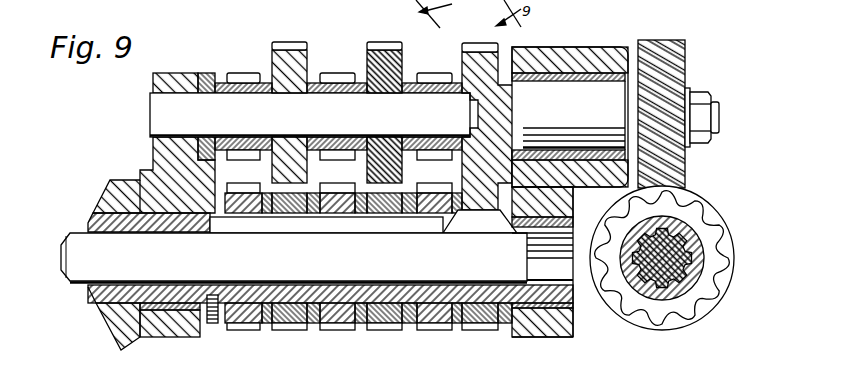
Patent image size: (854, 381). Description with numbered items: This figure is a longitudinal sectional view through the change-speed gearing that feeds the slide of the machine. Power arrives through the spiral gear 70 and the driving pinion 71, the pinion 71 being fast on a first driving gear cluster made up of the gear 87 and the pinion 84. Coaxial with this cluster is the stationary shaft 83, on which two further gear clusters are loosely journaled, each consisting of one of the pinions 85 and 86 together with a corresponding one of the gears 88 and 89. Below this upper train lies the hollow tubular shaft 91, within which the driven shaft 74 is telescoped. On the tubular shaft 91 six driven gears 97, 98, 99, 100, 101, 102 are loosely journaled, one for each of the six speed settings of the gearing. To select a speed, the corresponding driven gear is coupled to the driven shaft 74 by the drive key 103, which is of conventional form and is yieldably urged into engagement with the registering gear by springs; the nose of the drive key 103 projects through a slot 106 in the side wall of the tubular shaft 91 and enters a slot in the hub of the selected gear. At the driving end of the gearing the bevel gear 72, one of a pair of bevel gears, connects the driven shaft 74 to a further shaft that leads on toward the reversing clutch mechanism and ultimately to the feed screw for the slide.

The spiral gear 70 is at (702, 226).
The pinion 71 is at (680, 50).
The bevel gear 72 is at (112, 325).
The driven shaft 74 is at (85, 248).
The stationary shaft 83 is at (165, 104).
The pinion 84 is at (432, 153).
The pinion 85 is at (338, 78).
The pinion 86 is at (241, 78).
The gear 87 is at (473, 46).
The gear 88 is at (385, 43).
The gear 89 is at (290, 43).
The hollow tubular shaft 91 is at (545, 293).
The driven gear 97 is at (482, 331).
The driven gear 98 is at (443, 331).
The driven gear 99 is at (393, 331).
The driven gear 100 is at (345, 331).
The driven gear 101 is at (295, 331).
The driven gear 102 is at (241, 331).
The drive key 103 is at (481, 224).
The slot 106 is at (354, 224).